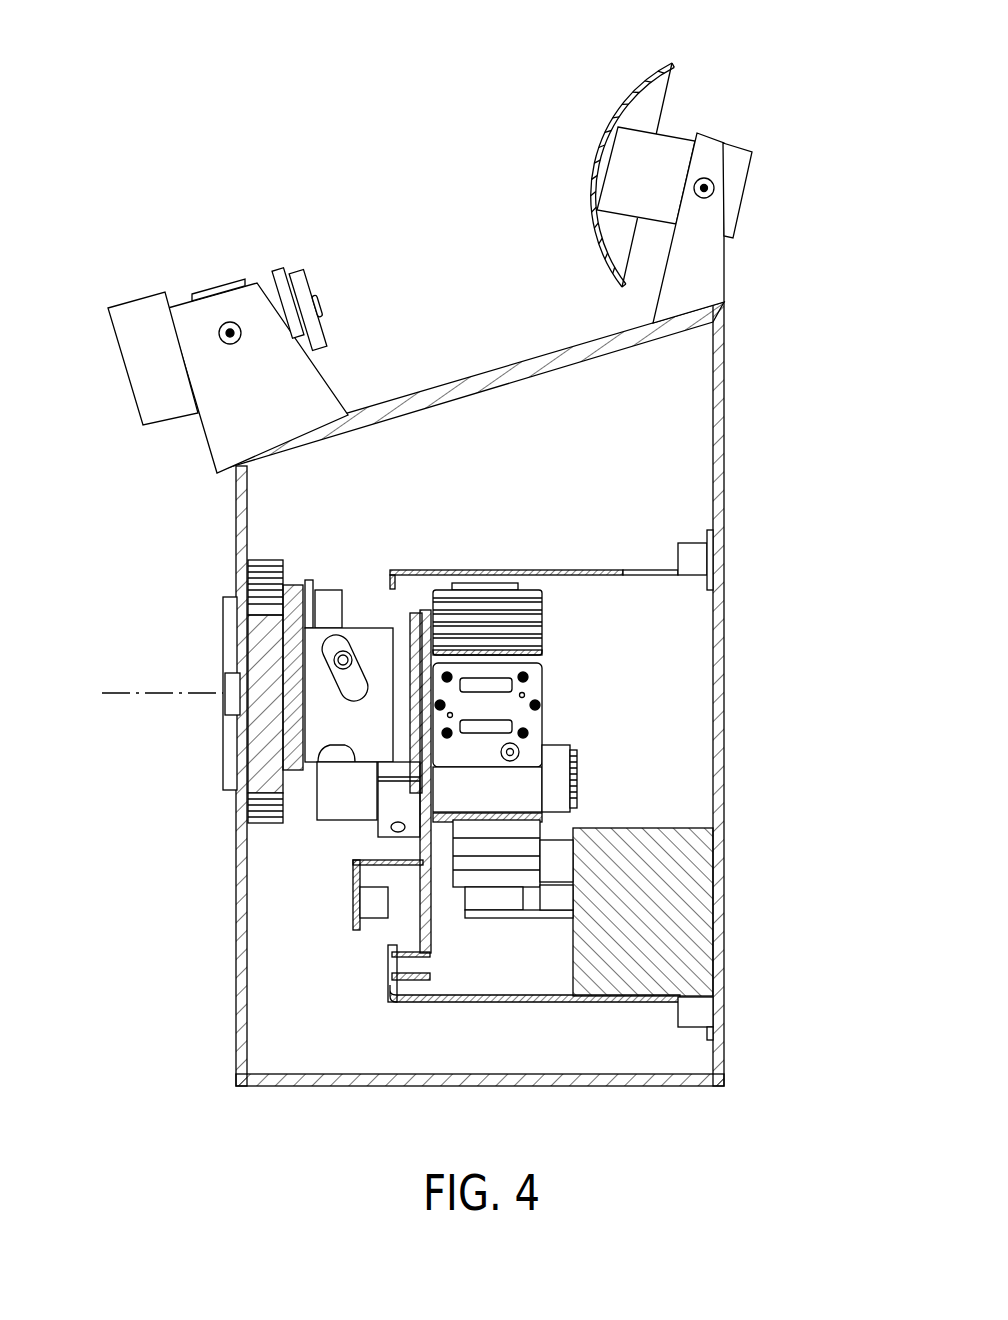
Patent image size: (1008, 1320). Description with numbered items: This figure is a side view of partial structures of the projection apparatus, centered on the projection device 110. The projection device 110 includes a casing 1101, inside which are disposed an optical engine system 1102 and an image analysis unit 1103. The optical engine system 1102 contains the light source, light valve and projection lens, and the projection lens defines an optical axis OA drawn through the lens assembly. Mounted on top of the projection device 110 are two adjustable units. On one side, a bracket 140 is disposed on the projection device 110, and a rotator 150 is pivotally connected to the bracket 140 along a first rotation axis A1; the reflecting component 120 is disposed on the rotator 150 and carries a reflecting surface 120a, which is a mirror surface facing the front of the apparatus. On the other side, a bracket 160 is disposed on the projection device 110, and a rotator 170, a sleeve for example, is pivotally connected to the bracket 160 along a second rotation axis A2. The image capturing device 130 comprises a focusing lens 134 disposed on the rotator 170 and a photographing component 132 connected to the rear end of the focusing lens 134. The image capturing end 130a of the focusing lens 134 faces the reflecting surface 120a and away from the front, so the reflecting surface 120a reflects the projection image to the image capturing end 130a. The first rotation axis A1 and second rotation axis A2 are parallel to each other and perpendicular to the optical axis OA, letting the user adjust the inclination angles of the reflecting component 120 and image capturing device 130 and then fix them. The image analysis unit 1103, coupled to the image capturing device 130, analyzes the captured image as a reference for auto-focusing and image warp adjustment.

The projection device 110 is at (740, 478).
The casing 1101 is at (717, 595).
The optical engine system 1102 is at (395, 785).
The image analysis unit 1103 is at (680, 905).
The reflecting component 120 is at (658, 158).
The reflecting surface 120a is at (625, 98).
The bracket 140 is at (698, 255).
The rotator 150 is at (738, 162).
The first rotation axis A1 is at (712, 196).
The image capturing device 130 is at (247, 309).
The photographing component 132 is at (142, 307).
The focusing lens 134 is at (287, 290).
The image capturing end 130a is at (312, 281).
The rotator 170 is at (218, 292).
The bracket 160 is at (310, 395).
The second rotation axis A2 is at (230, 345).
The optical axis OA is at (152, 693).